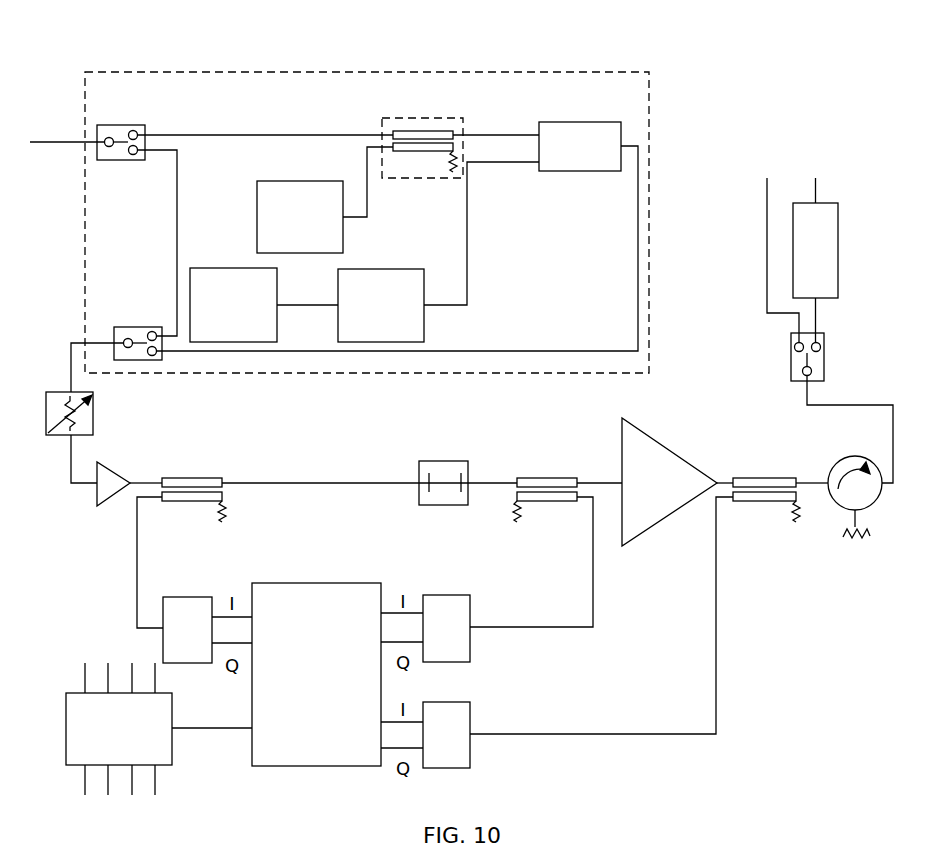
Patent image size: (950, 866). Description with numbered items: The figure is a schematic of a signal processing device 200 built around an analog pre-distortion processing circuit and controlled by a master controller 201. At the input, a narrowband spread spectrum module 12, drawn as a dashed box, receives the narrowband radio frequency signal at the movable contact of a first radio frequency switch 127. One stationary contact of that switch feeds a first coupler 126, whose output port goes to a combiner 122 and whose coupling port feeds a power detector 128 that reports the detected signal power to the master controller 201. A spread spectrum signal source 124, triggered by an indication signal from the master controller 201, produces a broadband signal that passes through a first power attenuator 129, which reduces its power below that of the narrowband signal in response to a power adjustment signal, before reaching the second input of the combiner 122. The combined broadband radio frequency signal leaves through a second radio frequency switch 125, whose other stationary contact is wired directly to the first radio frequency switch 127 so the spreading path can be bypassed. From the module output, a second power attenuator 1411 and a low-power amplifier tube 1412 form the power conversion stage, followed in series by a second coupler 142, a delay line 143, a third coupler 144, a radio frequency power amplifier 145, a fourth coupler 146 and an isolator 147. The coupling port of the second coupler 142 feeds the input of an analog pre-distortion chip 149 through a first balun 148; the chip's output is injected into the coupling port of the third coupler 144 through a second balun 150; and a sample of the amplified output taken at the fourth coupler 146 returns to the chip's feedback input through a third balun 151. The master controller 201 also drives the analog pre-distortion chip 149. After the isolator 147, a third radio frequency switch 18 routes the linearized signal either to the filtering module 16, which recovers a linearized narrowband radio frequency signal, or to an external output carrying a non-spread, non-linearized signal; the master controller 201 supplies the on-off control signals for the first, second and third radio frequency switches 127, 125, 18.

The power amplifier system 200 is at (742, 47).
The narrowband spread spectrum module 12 is at (432, 72).
The first radio frequency switch 127 is at (133, 125).
The first coupler 126 is at (393, 118).
The power detector 128 is at (338, 181).
The spread spectrum signal source 124 is at (193, 268).
The first power attenuator 129 is at (410, 269).
The combiner 122 is at (568, 171).
The second radio frequency switch 125 is at (117, 327).
The second power attenuator 1411 is at (97, 404).
The low-power amplifier tube 1412 is at (108, 468).
The second coupler 142 is at (182, 501).
The delay line 143 is at (433, 505).
The third coupler 144 is at (573, 501).
The radio frequency power amplifier 145 is at (645, 435).
The fourth coupler 146 is at (738, 478).
The isolator 147 is at (863, 458).
The first balun 148 is at (170, 603).
The analog pre-distortion chip 149 is at (303, 583).
The second balun 150 is at (438, 600).
The third balun 151 is at (470, 710).
The master controller 201 is at (165, 760).
The filtering module 16 is at (833, 273).
The third radio frequency switch 18 is at (822, 367).